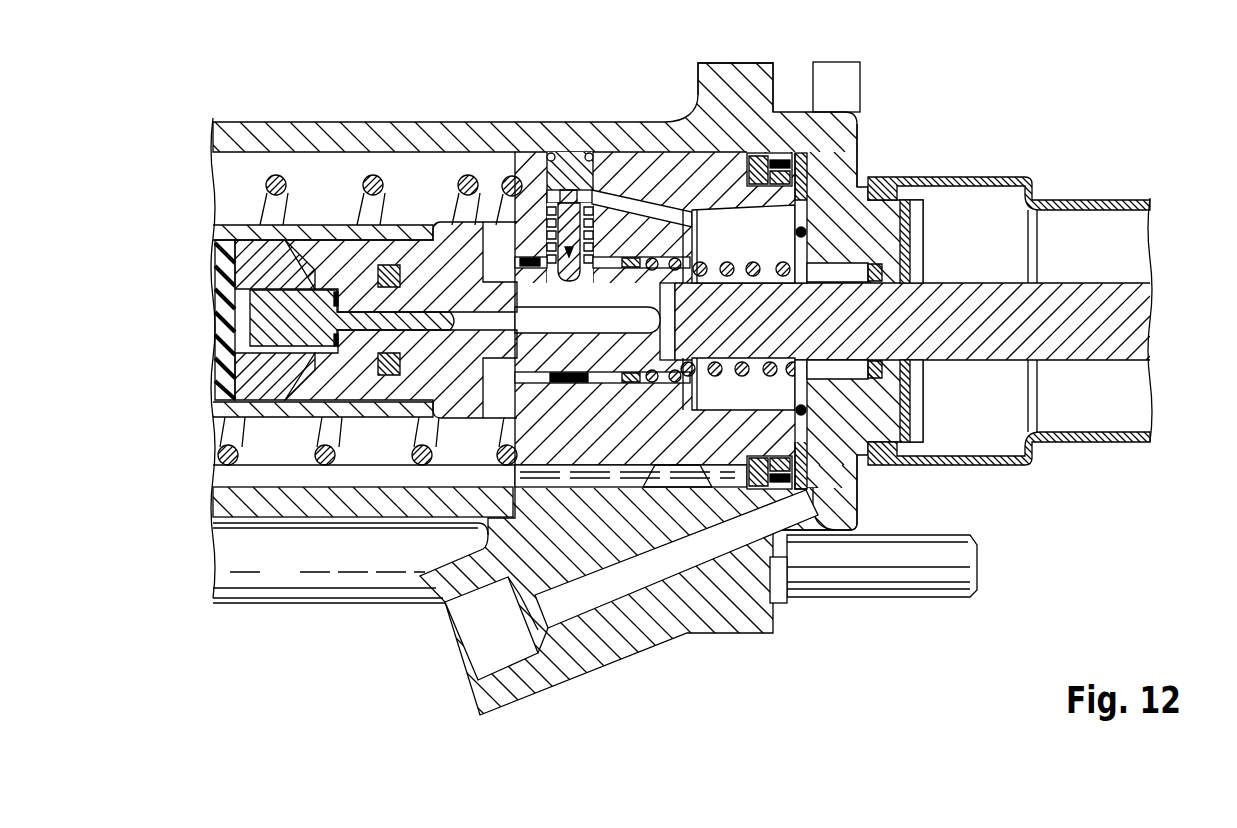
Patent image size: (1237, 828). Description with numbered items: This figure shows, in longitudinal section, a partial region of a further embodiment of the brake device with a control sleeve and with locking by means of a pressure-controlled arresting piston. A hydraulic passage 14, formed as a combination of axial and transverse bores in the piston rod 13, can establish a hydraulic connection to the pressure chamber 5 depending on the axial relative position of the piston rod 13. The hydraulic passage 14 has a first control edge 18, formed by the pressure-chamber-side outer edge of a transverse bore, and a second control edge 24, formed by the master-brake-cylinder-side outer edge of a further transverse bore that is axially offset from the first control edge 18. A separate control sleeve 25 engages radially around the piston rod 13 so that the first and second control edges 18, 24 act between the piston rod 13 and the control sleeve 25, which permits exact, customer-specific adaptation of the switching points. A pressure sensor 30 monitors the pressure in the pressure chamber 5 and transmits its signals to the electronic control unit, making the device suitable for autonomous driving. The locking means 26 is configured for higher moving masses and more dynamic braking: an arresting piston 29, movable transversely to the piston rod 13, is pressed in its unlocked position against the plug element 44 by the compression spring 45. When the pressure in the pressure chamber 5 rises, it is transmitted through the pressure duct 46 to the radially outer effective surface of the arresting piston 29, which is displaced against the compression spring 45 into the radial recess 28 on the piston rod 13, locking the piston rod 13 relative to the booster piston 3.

The housing 3 is at (310, 140).
The pressure chamber 5 is at (835, 168).
The piston rod 13 is at (1092, 325).
The hydraulic passage 14 is at (857, 497).
The first control edge 18 is at (628, 320).
The second control edge 24 is at (458, 400).
The control sleeve 25 is at (606, 375).
The locking means 26 is at (497, 273).
The radial recess 28 is at (570, 353).
The arresting piston 29 is at (572, 190).
The pressure sensor 30 is at (845, 85).
The plug element 44 is at (585, 172).
The compression spring 45 is at (543, 230).
The pressure duct 46 is at (800, 443).